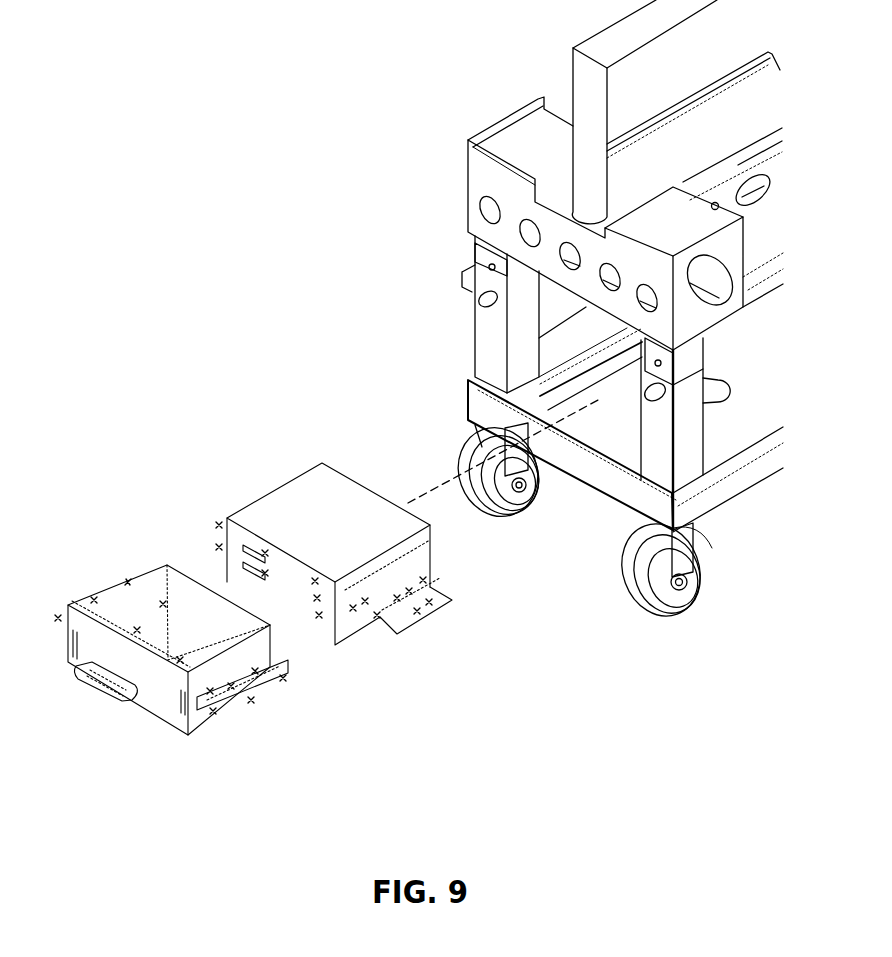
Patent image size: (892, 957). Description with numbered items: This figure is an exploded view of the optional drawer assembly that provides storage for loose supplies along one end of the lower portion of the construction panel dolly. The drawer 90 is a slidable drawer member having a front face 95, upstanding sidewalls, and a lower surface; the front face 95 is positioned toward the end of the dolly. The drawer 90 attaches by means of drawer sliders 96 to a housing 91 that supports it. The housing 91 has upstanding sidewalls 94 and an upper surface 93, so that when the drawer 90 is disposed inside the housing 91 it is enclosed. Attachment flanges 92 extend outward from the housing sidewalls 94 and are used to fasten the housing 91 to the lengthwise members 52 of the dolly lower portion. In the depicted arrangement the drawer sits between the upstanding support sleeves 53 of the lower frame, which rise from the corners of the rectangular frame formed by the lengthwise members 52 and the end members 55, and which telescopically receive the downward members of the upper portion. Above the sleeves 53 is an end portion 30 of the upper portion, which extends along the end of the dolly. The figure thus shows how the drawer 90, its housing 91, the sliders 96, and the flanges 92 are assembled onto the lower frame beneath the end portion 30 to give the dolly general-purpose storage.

The end portion 30 is at (597, 313).
The lengthwise member 52 is at (600, 333).
The upstanding support sleeve 53 is at (480, 335).
The end member 55 is at (590, 470).
The drawer 90 is at (178, 632).
The housing 91 is at (358, 530).
The attachment flange 92 is at (418, 613).
The upper surface 93 is at (352, 495).
The upstanding sidewall 94 is at (427, 552).
The front face 95 is at (158, 712).
The drawer slider 96 is at (327, 618).